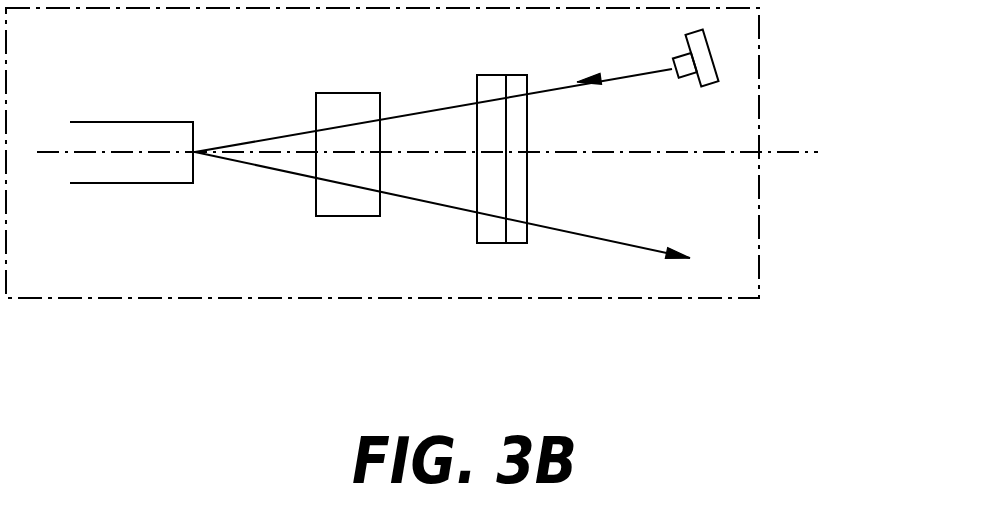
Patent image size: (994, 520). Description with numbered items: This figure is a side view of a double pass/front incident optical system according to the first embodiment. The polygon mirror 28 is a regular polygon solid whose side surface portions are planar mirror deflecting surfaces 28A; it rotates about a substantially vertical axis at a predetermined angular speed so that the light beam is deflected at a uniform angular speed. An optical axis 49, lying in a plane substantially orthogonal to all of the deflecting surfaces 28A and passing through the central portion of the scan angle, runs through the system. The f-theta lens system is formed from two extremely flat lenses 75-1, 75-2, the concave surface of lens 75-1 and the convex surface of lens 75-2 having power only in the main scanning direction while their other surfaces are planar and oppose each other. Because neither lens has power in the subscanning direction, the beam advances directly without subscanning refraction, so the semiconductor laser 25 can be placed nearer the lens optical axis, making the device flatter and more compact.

The optical axis 49 is at (800, 150).
The polygon mirror 28 is at (145, 173).
The deflecting surface 28A is at (192, 165).
The lens 75-1 is at (349, 200).
The lens 75-2 is at (488, 230).
The semiconductor laser 25 is at (708, 70).